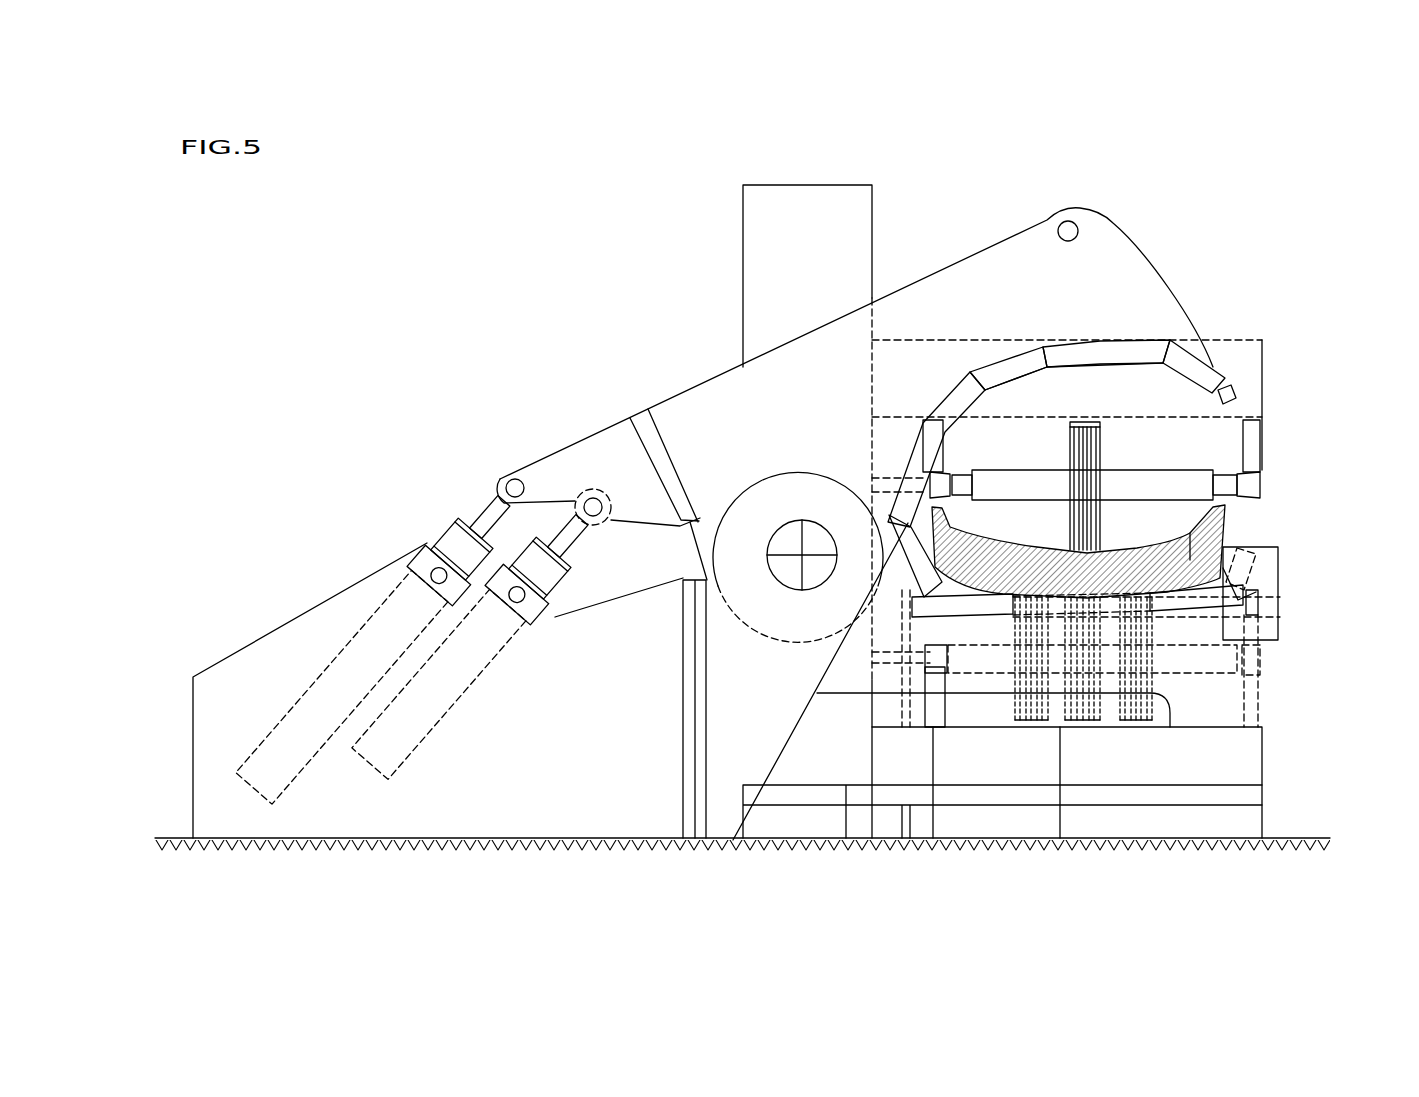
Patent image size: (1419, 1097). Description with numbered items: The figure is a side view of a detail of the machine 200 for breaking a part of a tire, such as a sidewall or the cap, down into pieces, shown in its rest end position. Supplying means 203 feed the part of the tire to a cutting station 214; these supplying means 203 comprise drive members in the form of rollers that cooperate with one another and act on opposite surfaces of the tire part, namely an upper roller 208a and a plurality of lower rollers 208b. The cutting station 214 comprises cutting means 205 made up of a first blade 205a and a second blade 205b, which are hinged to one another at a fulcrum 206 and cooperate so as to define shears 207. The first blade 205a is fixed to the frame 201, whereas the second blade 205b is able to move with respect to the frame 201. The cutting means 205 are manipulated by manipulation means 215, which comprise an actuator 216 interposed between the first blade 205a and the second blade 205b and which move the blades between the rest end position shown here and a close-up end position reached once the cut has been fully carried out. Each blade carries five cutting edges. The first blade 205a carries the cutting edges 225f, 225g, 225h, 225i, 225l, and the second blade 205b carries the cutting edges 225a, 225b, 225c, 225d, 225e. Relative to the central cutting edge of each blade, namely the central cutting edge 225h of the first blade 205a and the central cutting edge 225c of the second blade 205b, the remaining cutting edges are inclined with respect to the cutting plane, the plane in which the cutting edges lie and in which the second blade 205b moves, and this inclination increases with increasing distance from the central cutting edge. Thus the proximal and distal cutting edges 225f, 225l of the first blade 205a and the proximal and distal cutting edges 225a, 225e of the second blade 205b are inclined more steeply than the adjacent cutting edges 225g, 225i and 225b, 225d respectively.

The machine 200 is at (1237, 233).
The frame 201 is at (565, 720).
The supplying means 203 is at (1193, 484).
The cutting means 205 is at (1152, 480).
The first blade 205a is at (1220, 536).
The second blade 205b is at (1040, 385).
The fulcrum 206 is at (785, 568).
The shears 207 is at (1050, 203).
The upper roller 208a is at (1105, 447).
The lower rollers 208b is at (1023, 710).
The cutting station 214 is at (1290, 490).
The manipulation means 215 is at (545, 528).
The actuator 216 is at (479, 636).
The proximal cutting edge of second blade 225a is at (905, 465).
The cutting edge of second blade 225b is at (963, 398).
The central cutting edge of second blade 225c is at (1018, 350).
The cutting edge of second blade 225d is at (1140, 337).
The distal cutting edge of second blade 225e is at (1225, 355).
The proximal cutting edge of first blade 225f is at (912, 562).
The cutting edge of first blade 225g is at (952, 592).
The central cutting edge of first blade 225h is at (1060, 600).
The cutting edge of first blade 225i is at (1173, 603).
The distal cutting edge of first blade 225l is at (1257, 587).